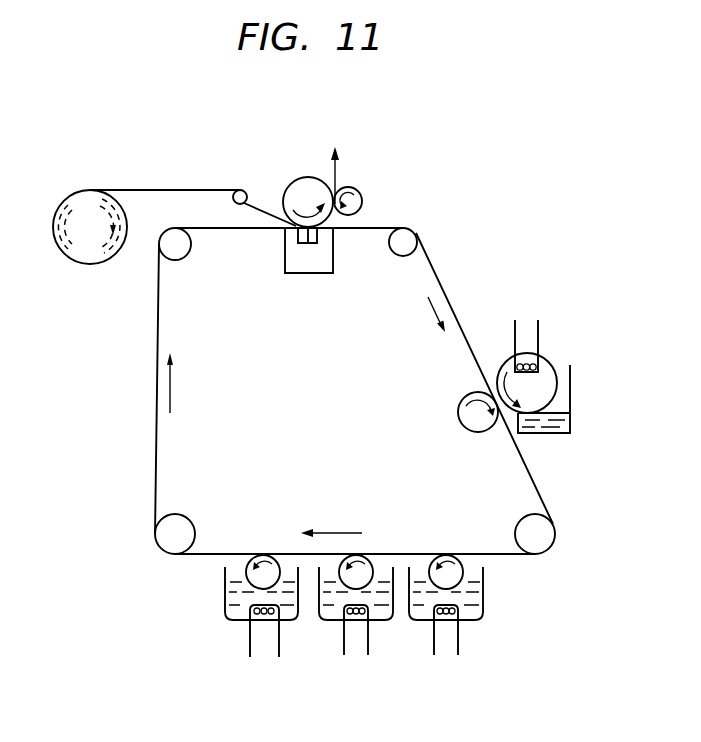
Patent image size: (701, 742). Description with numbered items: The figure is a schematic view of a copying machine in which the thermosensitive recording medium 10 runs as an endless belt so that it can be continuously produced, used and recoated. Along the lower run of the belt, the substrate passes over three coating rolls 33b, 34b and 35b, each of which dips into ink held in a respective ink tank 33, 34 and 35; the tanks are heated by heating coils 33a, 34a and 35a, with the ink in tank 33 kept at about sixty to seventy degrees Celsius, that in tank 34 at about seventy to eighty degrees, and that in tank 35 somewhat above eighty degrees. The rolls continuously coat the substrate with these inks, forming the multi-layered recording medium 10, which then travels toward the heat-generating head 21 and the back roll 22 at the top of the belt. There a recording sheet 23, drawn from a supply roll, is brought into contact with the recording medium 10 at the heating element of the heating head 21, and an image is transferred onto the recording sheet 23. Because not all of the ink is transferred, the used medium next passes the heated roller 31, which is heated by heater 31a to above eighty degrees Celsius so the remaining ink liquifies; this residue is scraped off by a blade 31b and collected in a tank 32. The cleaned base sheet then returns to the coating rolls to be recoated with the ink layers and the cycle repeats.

The recording medium 10 is at (153, 467).
The heat-generating head 21 is at (318, 268).
The back roll 22 is at (302, 184).
The recording sheet 23 is at (158, 190).
The heated roller 31 is at (507, 368).
The heater 31a is at (540, 333).
The blade 31b is at (555, 404).
The tank 32 is at (557, 436).
The ink tank 33 is at (481, 609).
The heating coil 33a is at (450, 637).
The coating roll 33b is at (455, 568).
The ink tank 34 is at (384, 618).
The heating coil 34a is at (357, 634).
The coating roll 34b is at (368, 568).
The ink tank 35 is at (232, 618).
The heating coil 35a is at (265, 643).
The coating roll 35b is at (276, 572).